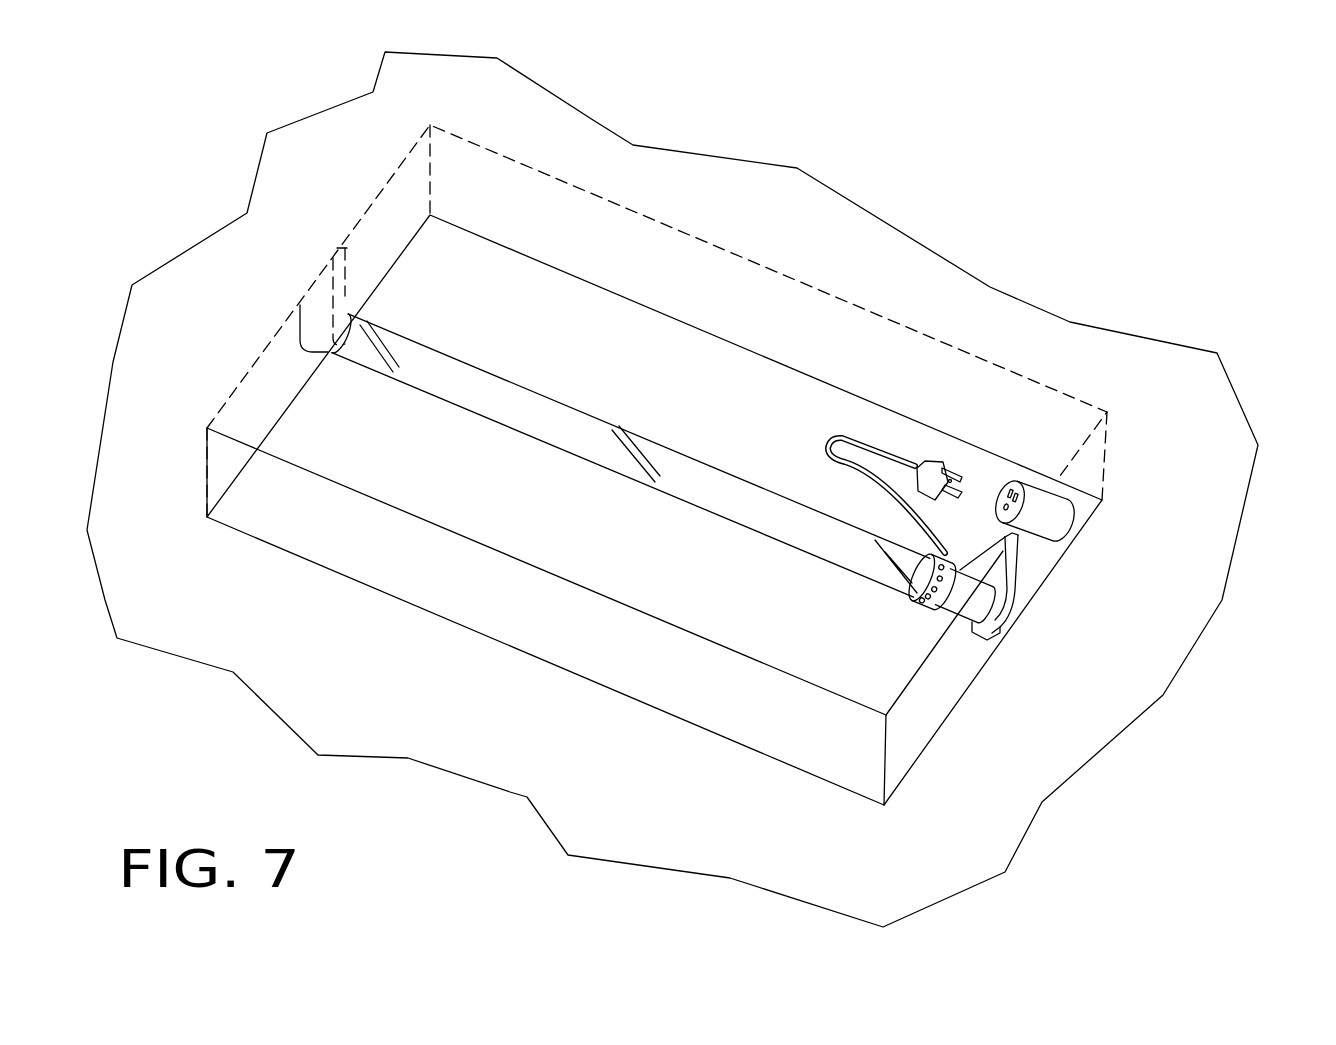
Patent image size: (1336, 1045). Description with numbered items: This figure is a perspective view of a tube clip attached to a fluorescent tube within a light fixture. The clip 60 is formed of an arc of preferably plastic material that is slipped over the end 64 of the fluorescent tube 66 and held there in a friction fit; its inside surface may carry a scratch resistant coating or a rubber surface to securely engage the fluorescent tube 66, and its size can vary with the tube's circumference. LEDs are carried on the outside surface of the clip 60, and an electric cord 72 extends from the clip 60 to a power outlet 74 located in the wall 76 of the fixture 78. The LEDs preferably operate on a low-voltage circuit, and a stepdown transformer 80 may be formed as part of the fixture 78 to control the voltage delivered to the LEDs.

The clip 60 is at (908, 607).
The end of fluorescent tube 64 is at (965, 608).
The fluorescent tube 66 is at (507, 428).
The electric cord 72 is at (827, 455).
The power outlet 74 is at (1065, 523).
The wall 76 is at (897, 752).
The fixture 78 is at (897, 323).
The stepdown transformer 80 is at (1032, 520).